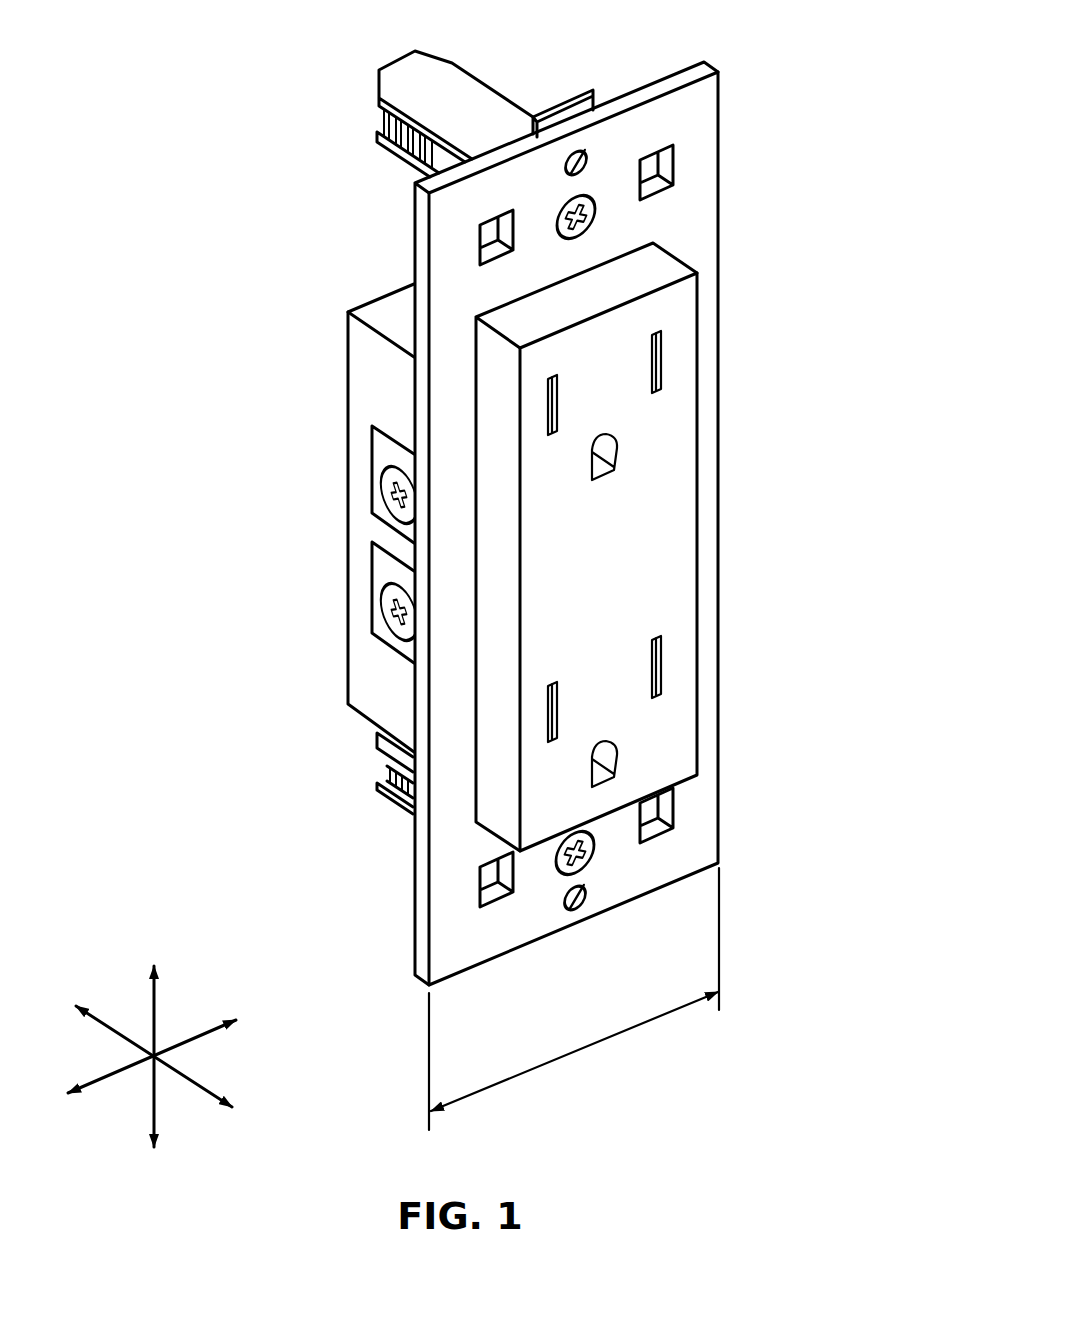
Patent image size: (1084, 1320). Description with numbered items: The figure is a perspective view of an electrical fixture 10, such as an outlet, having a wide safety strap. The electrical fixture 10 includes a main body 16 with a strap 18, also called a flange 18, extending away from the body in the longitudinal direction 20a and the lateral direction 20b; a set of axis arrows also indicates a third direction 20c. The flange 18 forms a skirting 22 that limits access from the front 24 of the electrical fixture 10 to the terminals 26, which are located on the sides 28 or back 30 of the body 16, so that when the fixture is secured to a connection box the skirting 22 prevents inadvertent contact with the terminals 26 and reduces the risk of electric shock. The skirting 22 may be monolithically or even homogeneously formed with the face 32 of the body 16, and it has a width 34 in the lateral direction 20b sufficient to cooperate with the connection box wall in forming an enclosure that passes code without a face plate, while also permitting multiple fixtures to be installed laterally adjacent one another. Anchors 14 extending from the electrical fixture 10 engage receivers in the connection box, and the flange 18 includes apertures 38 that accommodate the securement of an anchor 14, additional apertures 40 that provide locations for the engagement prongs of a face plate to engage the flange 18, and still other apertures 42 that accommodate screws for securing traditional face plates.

The electrical fixture 10 is at (843, 388).
The anchor 14 is at (437, 70).
The main body 16 is at (228, 503).
The strap 18 is at (726, 152).
The longitudinal direction 20a is at (157, 992).
The lateral direction 20b is at (207, 1037).
The depth axis 20c is at (193, 1088).
The skirting 22 is at (697, 241).
The front 24 is at (654, 590).
The terminals 26 is at (380, 617).
The sides 28 is at (374, 392).
The back 30 is at (380, 286).
The face 32 is at (683, 504).
The width 34 is at (611, 1040).
The apertures 38 is at (593, 190).
The apertures 40 is at (499, 212).
The apertures 42 is at (562, 182).